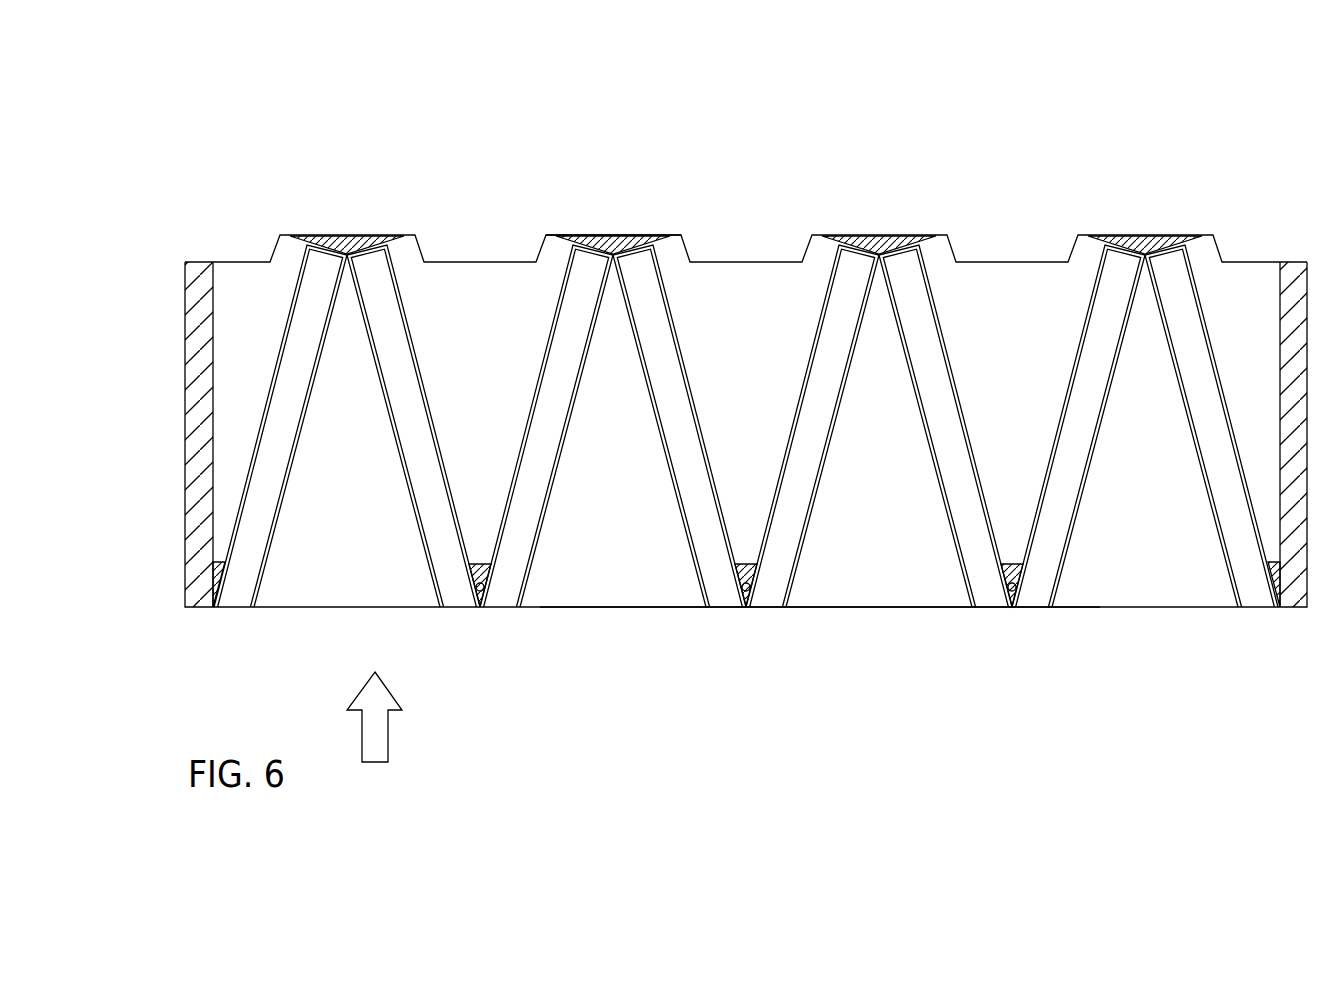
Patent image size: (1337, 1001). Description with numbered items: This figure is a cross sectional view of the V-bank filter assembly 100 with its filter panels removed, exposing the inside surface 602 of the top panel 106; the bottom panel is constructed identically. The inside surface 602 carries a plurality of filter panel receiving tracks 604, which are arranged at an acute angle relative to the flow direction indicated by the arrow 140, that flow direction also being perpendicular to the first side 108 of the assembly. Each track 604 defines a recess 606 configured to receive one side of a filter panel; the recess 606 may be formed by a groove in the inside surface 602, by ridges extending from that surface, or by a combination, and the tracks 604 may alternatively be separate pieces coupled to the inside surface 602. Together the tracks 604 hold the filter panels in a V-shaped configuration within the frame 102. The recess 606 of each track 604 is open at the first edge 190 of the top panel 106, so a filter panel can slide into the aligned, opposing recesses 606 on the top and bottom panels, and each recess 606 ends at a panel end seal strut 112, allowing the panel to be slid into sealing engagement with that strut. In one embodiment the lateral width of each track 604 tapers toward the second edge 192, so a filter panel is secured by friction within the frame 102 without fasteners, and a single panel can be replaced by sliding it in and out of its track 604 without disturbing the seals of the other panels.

The V-bank filter assembly 100 is at (848, 87).
The frame 102 is at (185, 343).
The top panel 106 is at (236, 302).
The first side 108 is at (827, 608).
The panel end seal strut 112 is at (347, 233).
The arrow 140 is at (390, 737).
The first edge 190 is at (648, 608).
The second edge 192 is at (593, 233).
The inside surface 602 is at (1030, 342).
The filter panel receiving track 604 is at (680, 503).
The recess 606 is at (665, 378).